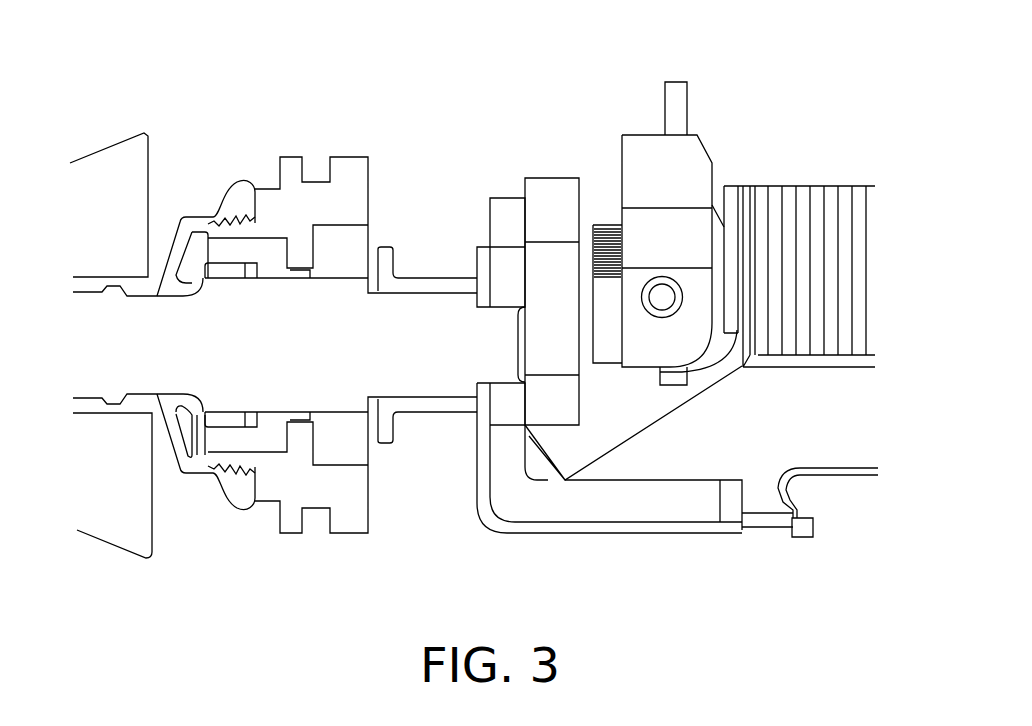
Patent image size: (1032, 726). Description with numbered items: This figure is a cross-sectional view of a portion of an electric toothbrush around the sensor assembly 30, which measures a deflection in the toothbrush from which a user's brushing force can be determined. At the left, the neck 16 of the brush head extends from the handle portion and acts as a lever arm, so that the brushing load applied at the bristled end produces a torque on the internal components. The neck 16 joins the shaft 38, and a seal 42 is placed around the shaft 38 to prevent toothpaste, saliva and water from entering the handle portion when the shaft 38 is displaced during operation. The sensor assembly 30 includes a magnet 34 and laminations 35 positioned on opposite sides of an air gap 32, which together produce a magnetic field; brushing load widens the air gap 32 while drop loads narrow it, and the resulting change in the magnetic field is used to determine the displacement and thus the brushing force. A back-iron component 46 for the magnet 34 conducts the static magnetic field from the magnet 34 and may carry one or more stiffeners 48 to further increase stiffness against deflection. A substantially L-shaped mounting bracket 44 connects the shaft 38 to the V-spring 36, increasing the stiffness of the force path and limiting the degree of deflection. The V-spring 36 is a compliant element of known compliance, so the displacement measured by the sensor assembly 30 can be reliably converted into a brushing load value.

The neck 16 is at (111, 146).
The sensor assembly 30 is at (628, 98).
The air gap 32 is at (589, 224).
The magnet 34 is at (541, 178).
The laminations 35 is at (612, 245).
The V-spring 36 is at (805, 453).
The shaft 38 is at (278, 298).
The seal 42 is at (193, 468).
The mounting bracket 44 is at (648, 527).
The back-iron component 46 is at (500, 198).
The stiffeners 48 is at (543, 468).